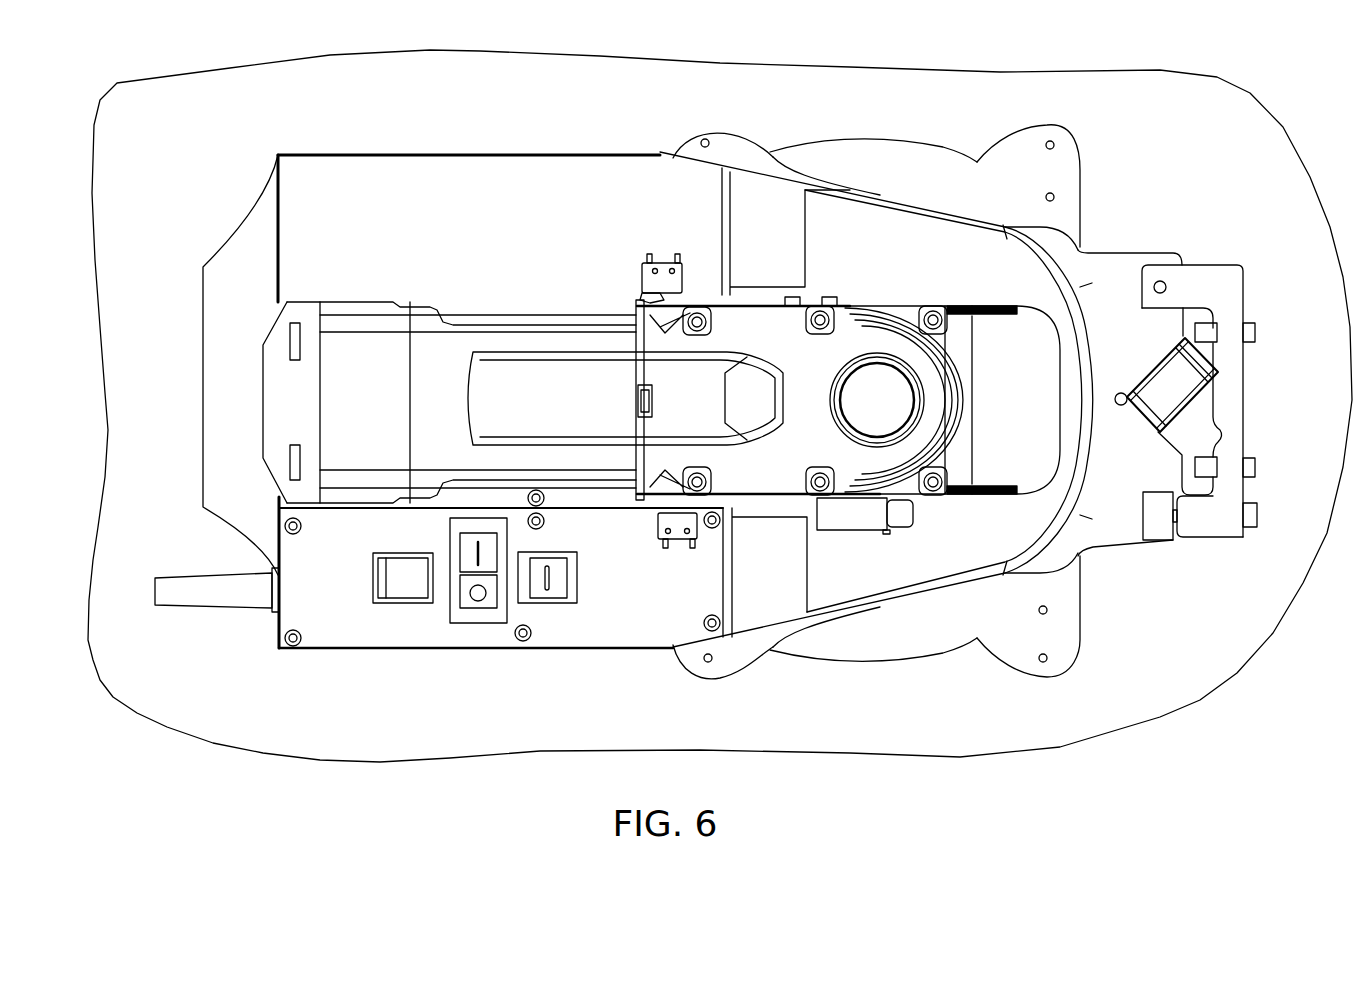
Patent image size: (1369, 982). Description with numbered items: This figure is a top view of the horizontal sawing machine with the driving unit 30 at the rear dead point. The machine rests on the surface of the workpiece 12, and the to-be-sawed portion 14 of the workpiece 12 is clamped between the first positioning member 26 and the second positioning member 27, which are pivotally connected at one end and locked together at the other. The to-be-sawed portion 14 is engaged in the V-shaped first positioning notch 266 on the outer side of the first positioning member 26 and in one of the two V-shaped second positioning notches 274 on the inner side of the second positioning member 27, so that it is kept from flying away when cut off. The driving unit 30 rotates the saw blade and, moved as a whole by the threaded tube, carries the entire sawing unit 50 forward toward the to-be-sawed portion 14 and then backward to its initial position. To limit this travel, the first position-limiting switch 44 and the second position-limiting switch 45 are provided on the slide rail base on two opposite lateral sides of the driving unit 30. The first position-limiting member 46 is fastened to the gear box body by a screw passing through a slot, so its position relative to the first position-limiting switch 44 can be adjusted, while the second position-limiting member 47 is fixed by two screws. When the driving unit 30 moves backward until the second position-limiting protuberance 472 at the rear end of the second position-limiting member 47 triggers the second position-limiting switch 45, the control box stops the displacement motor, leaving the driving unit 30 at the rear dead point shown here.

The workpiece 12 is at (1163, 670).
The to-be-sawed portion 14 is at (1183, 385).
The first positioning member 26 is at (1113, 287).
The second positioning member 27 is at (1222, 285).
The second positioning notches 274 is at (1217, 362).
The first positioning notch 266 is at (1173, 448).
The driving unit 30 is at (371, 292).
The first position-limiting switch 44 is at (673, 541).
The second position-limiting switch 45 is at (655, 266).
The second position-limiting protuberance 472 is at (658, 296).
The first position-limiting member 46 is at (757, 498).
The second position-limiting member 47 is at (762, 300).
The sawing unit 50 is at (876, 662).